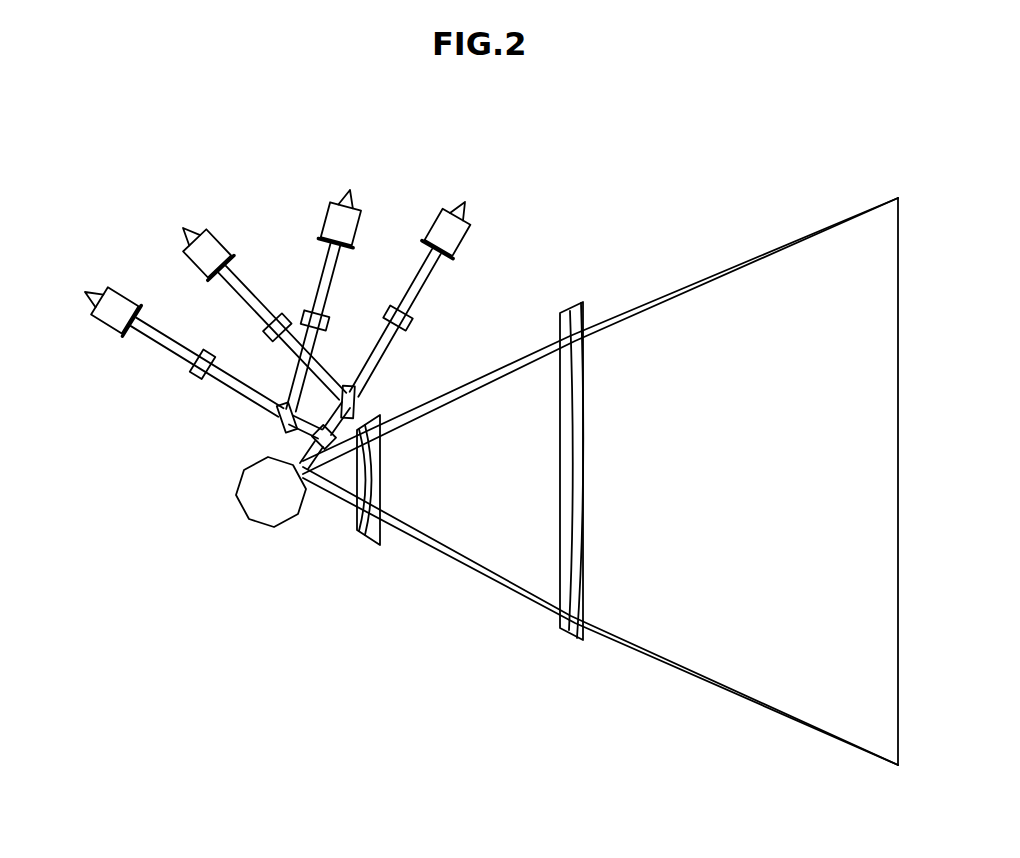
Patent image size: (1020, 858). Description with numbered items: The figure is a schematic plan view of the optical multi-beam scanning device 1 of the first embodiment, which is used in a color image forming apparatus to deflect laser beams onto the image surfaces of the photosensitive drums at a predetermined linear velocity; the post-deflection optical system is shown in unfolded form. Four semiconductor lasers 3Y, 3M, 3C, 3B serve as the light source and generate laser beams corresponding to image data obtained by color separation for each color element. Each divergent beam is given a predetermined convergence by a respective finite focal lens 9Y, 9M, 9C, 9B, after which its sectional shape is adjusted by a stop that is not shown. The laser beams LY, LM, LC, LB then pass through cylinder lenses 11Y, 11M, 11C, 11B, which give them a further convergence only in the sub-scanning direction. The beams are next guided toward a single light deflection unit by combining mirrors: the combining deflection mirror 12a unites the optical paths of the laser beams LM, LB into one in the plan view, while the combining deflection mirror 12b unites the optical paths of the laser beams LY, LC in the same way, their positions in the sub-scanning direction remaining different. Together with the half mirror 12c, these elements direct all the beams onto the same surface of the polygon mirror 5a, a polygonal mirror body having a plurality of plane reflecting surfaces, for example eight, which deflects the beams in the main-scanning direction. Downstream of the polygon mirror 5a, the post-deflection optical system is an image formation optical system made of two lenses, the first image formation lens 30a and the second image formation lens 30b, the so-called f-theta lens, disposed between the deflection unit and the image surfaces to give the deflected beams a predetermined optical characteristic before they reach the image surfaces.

The optical multi-beam scanning device 1 is at (686, 182).
The semiconductor laser 3Y is at (85, 292).
The finite focal lens 9Y is at (131, 301).
The laser beam LY is at (146, 336).
The cylinder lens 11Y is at (190, 372).
The semiconductor laser 3B is at (183, 227).
The finite focal lens 9B is at (226, 249).
The laser beam LB is at (240, 278).
The cylinder lens 11B is at (263, 331).
The semiconductor laser 3C is at (350, 191).
The finite focal lens 9C is at (359, 218).
The laser beam LC is at (335, 269).
The cylinder lens 11C is at (304, 310).
The semiconductor laser 3M is at (467, 202).
The finite focal lens 9M is at (460, 244).
The laser beam LM is at (425, 282).
The cylinder lens 11M is at (407, 327).
The combining deflection mirror 12a is at (357, 407).
The combining deflection mirror 12b is at (280, 422).
The half mirror 12c is at (313, 440).
The polygon mirror 5a is at (263, 528).
The first image formation lens 30a is at (367, 546).
The second image formation lens 30b is at (567, 641).